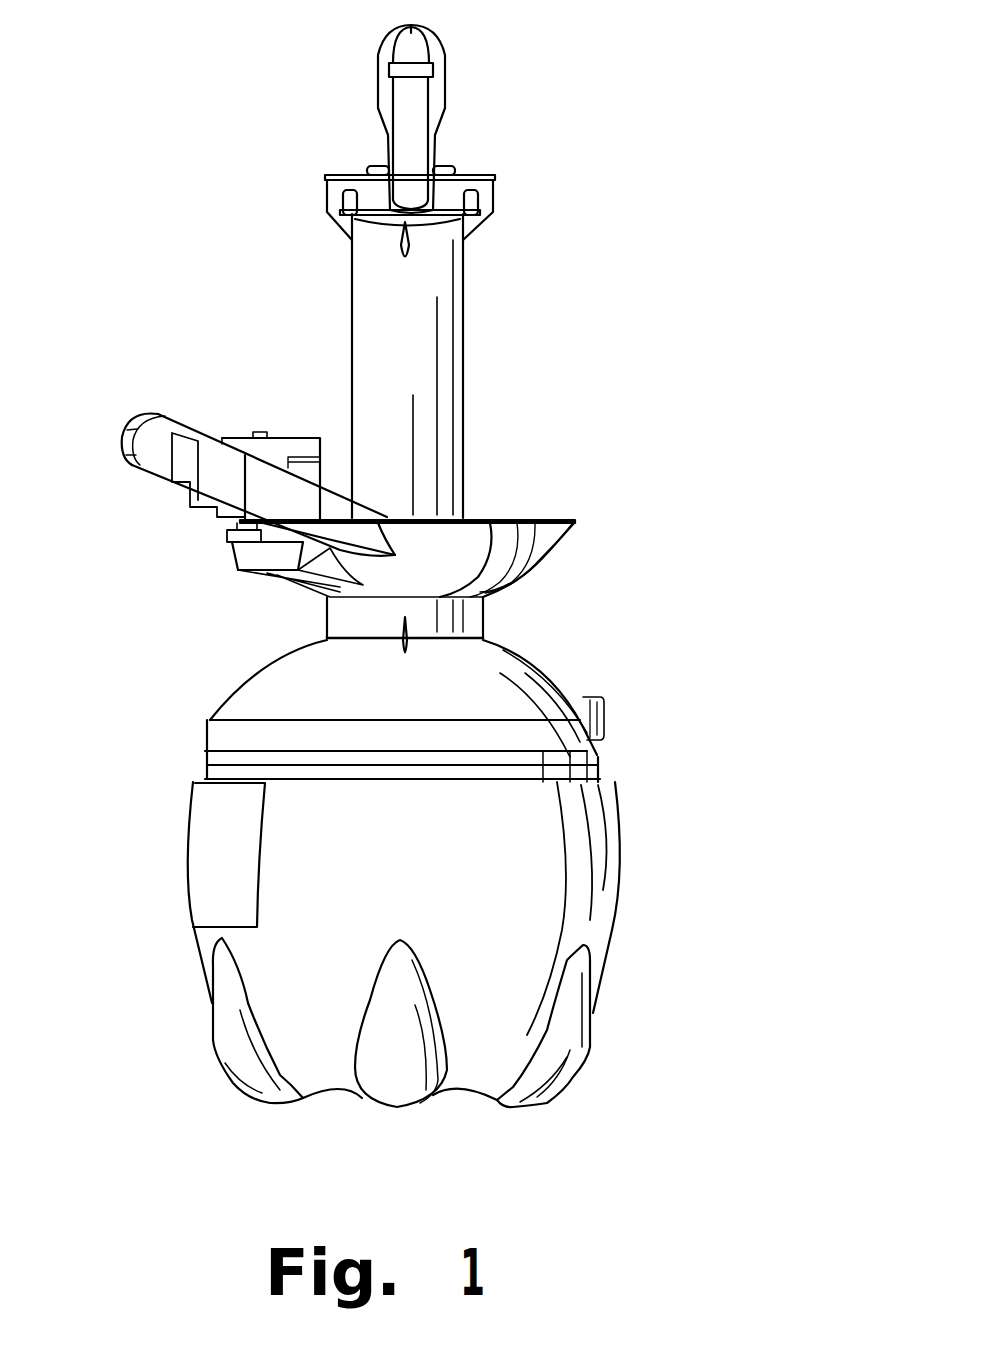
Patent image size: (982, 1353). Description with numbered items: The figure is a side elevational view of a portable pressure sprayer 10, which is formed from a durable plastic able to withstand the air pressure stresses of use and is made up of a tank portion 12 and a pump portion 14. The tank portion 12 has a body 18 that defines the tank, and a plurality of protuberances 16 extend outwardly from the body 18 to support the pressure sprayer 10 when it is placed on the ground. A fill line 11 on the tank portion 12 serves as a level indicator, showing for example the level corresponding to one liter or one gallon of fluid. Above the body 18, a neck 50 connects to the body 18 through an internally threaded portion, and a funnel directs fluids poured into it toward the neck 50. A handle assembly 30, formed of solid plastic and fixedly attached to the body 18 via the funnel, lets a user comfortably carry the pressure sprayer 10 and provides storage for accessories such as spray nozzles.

The portable pressure sprayer 10 is at (716, 96).
The pump portion 14 is at (290, 282).
The handle assembly 30 is at (130, 416).
The neck 50 is at (485, 613).
The tank portion 12 is at (160, 697).
The fill line 11 is at (600, 778).
The body 18 is at (620, 866).
The protuberances 16 is at (212, 1030).